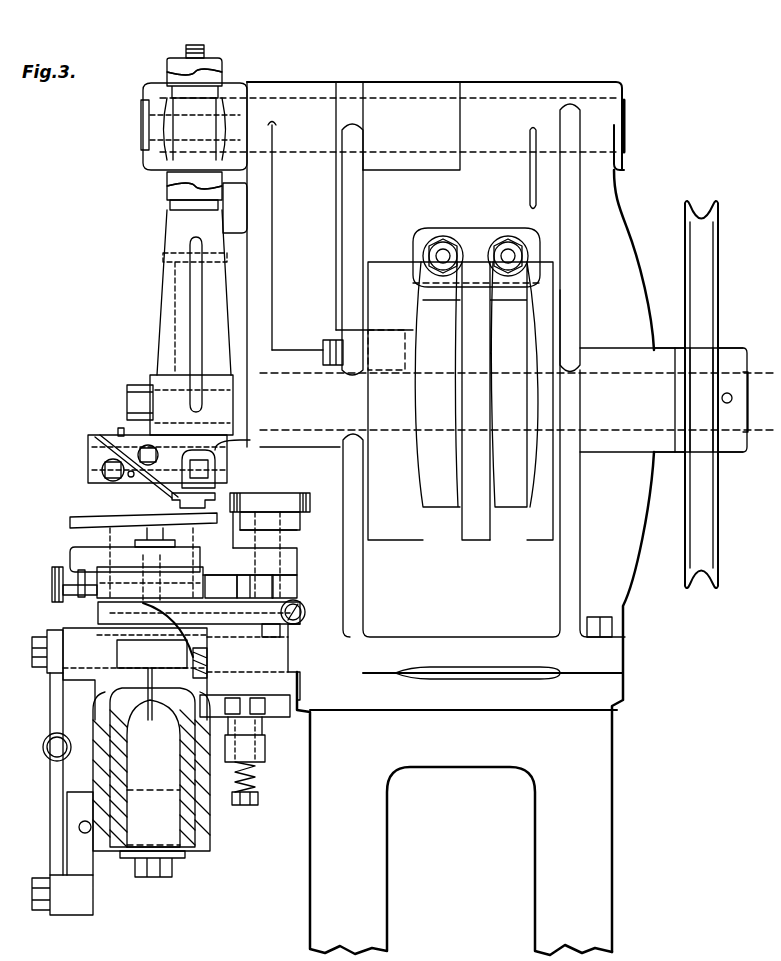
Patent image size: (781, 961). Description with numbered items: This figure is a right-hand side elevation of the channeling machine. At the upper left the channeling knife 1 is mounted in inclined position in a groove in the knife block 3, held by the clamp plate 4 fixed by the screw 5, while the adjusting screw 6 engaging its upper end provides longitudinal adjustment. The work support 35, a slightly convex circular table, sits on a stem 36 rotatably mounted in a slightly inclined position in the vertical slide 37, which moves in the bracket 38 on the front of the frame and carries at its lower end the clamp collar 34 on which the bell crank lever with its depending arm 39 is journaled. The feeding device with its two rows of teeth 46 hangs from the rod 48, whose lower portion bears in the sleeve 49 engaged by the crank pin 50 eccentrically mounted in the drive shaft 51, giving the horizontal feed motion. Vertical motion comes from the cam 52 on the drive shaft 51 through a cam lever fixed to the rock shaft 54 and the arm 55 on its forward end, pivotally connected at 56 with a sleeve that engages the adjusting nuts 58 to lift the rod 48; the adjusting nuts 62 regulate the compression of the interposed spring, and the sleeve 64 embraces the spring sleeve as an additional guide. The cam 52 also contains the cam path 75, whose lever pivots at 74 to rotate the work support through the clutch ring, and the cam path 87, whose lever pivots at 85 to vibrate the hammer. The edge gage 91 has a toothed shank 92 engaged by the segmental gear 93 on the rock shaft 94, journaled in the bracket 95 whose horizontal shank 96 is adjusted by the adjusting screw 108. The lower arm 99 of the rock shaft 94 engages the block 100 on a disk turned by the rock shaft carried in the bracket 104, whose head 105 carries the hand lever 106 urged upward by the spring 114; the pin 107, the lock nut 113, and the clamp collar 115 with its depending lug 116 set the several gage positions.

The channeling knife 1 is at (180, 499).
The knife block 3 is at (139, 471).
The clamp plate 4 is at (96, 470).
The screw 5 is at (133, 472).
The adjusting screw 6 is at (120, 437).
The clamp collar 34 is at (200, 855).
The work support 35 is at (70, 524).
The stem 36 is at (208, 812).
The vertical slide 37 is at (205, 840).
The bracket 38 is at (100, 690).
The depending arm 39 is at (67, 850).
The teeth 46 is at (205, 527).
The rod 48 is at (206, 52).
The sleeve 49 is at (217, 470).
The crank pin 50 is at (168, 385).
The drive shaft 51 is at (282, 378).
The cam 52 is at (406, 535).
The rock shaft 54 is at (488, 112).
The arm 55 is at (162, 165).
The pivotal connection 56 is at (143, 130).
The adjusting nuts 58 is at (222, 78).
The adjusting nuts 62 is at (168, 198).
The sleeve 64 is at (176, 242).
The pivot 74 is at (508, 249).
The cam path 75 is at (518, 515).
The pivot 85 is at (444, 249).
The cam path 87 is at (440, 500).
The edge gage 91 is at (222, 505).
The toothed shank 92 is at (303, 505).
The segmental gear 93 is at (288, 521).
The rock shaft 94 is at (282, 540).
The bracket 95 is at (272, 565).
The horizontal shank 96 is at (70, 559).
The arm 99 is at (245, 588).
The block 100 is at (262, 597).
The bracket 104 is at (289, 655).
The head 105 is at (278, 696).
The hand lever 106 is at (248, 750).
The pin 107 is at (224, 627).
The adjusting screw 108 is at (52, 585).
The lock nut 113 is at (198, 672).
The spring 114 is at (256, 786).
The clamp collar 115 is at (272, 627).
The depending lug 116 is at (305, 614).